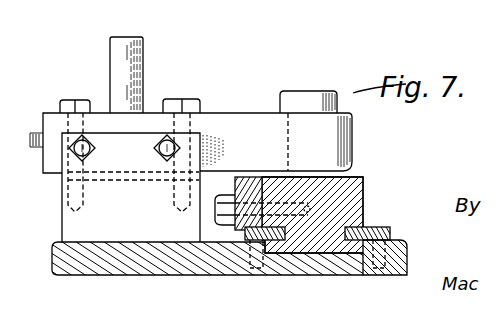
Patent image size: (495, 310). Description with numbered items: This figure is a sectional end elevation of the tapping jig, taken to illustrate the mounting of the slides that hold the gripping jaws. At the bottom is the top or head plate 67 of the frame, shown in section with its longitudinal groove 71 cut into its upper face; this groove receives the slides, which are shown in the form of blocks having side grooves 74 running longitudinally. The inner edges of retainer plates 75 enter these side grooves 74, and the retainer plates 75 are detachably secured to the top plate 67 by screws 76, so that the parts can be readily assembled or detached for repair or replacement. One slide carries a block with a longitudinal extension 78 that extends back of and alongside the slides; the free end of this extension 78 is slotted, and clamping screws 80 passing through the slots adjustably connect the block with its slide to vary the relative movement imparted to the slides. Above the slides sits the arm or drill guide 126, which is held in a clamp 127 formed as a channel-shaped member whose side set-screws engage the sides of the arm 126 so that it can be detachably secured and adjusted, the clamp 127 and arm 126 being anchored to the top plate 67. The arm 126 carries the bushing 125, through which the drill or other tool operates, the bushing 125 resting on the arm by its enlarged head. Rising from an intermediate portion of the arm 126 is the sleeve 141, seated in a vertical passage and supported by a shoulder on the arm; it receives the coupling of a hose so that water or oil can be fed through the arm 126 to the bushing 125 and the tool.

The sleeve 141 is at (118, 55).
The drill guide arm 126 is at (222, 118).
The bushing 125 is at (307, 97).
The longitudinal extension 78 is at (242, 177).
The clamping screws 80 is at (215, 219).
The clamp 127 is at (121, 229).
The retainer plates 75 is at (244, 233).
The side grooves 74 is at (353, 224).
The longitudinal groove 71 is at (333, 254).
The screws 76 is at (407, 249).
The top plate 67 is at (112, 258).